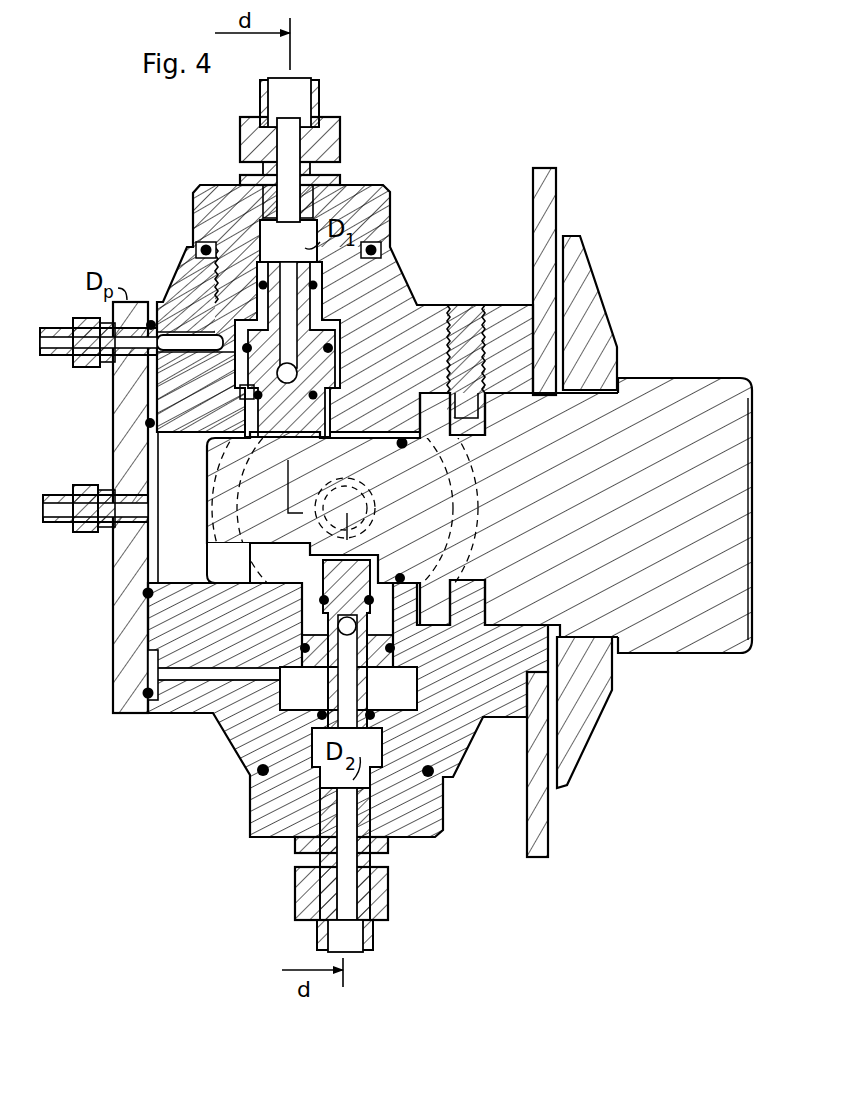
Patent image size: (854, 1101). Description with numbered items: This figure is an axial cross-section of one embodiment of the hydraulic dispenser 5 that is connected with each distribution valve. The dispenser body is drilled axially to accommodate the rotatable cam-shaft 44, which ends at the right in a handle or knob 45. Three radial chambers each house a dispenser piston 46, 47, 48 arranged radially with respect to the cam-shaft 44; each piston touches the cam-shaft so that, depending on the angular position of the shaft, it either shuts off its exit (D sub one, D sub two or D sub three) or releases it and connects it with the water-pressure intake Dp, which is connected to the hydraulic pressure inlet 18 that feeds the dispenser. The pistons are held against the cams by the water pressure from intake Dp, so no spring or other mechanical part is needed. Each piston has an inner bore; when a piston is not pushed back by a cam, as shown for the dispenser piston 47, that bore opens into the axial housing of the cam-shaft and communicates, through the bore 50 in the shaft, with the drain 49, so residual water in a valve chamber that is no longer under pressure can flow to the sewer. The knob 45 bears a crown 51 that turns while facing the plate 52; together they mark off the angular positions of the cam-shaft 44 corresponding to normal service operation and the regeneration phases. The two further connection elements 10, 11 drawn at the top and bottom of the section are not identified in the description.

The hydraulic dispenser 5 is at (429, 197).
The upper pressure inlet fitting 10 is at (314, 109).
The lower pressure inlet fitting 11 is at (373, 950).
The hydraulic pressure inlet 18 is at (61, 329).
The cam-shaft 44 is at (225, 473).
The knob 45 is at (708, 388).
The dispenser piston 46 is at (254, 398).
The dispenser piston 47 is at (372, 564).
The dispenser piston 48 is at (368, 500).
The drain 49 is at (78, 468).
The bore 50 is at (207, 556).
The crown 51 is at (609, 322).
The plate 52 is at (558, 218).